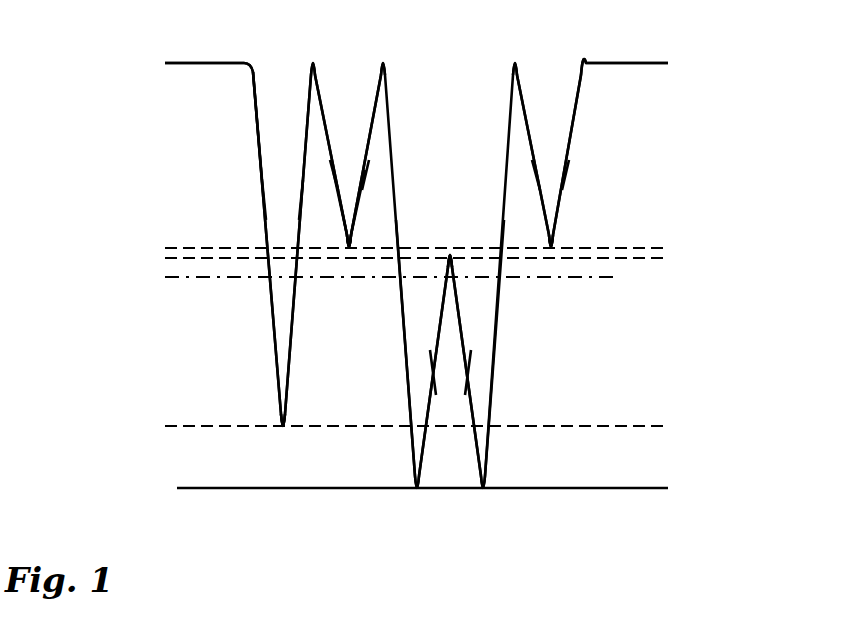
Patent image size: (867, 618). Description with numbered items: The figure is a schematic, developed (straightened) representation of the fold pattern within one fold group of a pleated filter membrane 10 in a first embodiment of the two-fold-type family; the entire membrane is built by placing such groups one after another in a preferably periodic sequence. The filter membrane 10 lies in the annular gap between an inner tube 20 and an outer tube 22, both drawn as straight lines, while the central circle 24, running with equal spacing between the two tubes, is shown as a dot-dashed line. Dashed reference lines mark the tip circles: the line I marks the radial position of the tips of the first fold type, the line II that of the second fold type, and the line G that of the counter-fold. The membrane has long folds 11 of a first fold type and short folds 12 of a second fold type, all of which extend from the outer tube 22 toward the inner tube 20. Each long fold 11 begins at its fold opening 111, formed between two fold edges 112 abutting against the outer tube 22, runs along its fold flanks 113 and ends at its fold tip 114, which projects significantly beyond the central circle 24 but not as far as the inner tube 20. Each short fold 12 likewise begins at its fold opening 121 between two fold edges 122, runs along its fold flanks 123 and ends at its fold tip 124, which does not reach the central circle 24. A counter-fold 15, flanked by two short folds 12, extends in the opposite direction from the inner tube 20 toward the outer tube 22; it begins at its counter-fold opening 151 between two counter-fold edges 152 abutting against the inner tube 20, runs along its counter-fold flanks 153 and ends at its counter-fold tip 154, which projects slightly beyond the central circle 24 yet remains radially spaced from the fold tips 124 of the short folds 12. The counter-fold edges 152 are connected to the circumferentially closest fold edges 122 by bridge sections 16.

The filter membrane 10 is at (275, 320).
The outer tube 22 is at (165, 63).
The inner tube 20 is at (177, 488).
The long fold of a first fold type 11 is at (284, 228).
The short fold of a second fold type 12 is at (553, 128).
The fold edge of the first fold type 112 is at (313, 60).
The fold opening of the first fold type 111 is at (277, 72).
The fold edge of the second fold type 122 is at (593, 30).
The fold opening of the second fold type 121 is at (353, 71).
The counter-fold tip 154 is at (450, 255).
The fold flank of the first fold type 113 is at (301, 203).
The fold flank of the second fold type 123 is at (333, 173).
The fold tip of the first fold type 114 is at (283, 428).
The fold tip of the second fold type 124 is at (349, 247).
The counter-fold edge 152 is at (417, 490).
The counter-fold opening 151 is at (449, 479).
The counter-fold flank 153 is at (468, 373).
The counter-fold 15 is at (449, 307).
The bridge section 16 is at (404, 362).
The tip circle of the second fold type II is at (613, 247).
The counter-fold tip circle G is at (647, 258).
The central circle 24 is at (643, 277).
The tip circle of the first fold type I is at (650, 426).